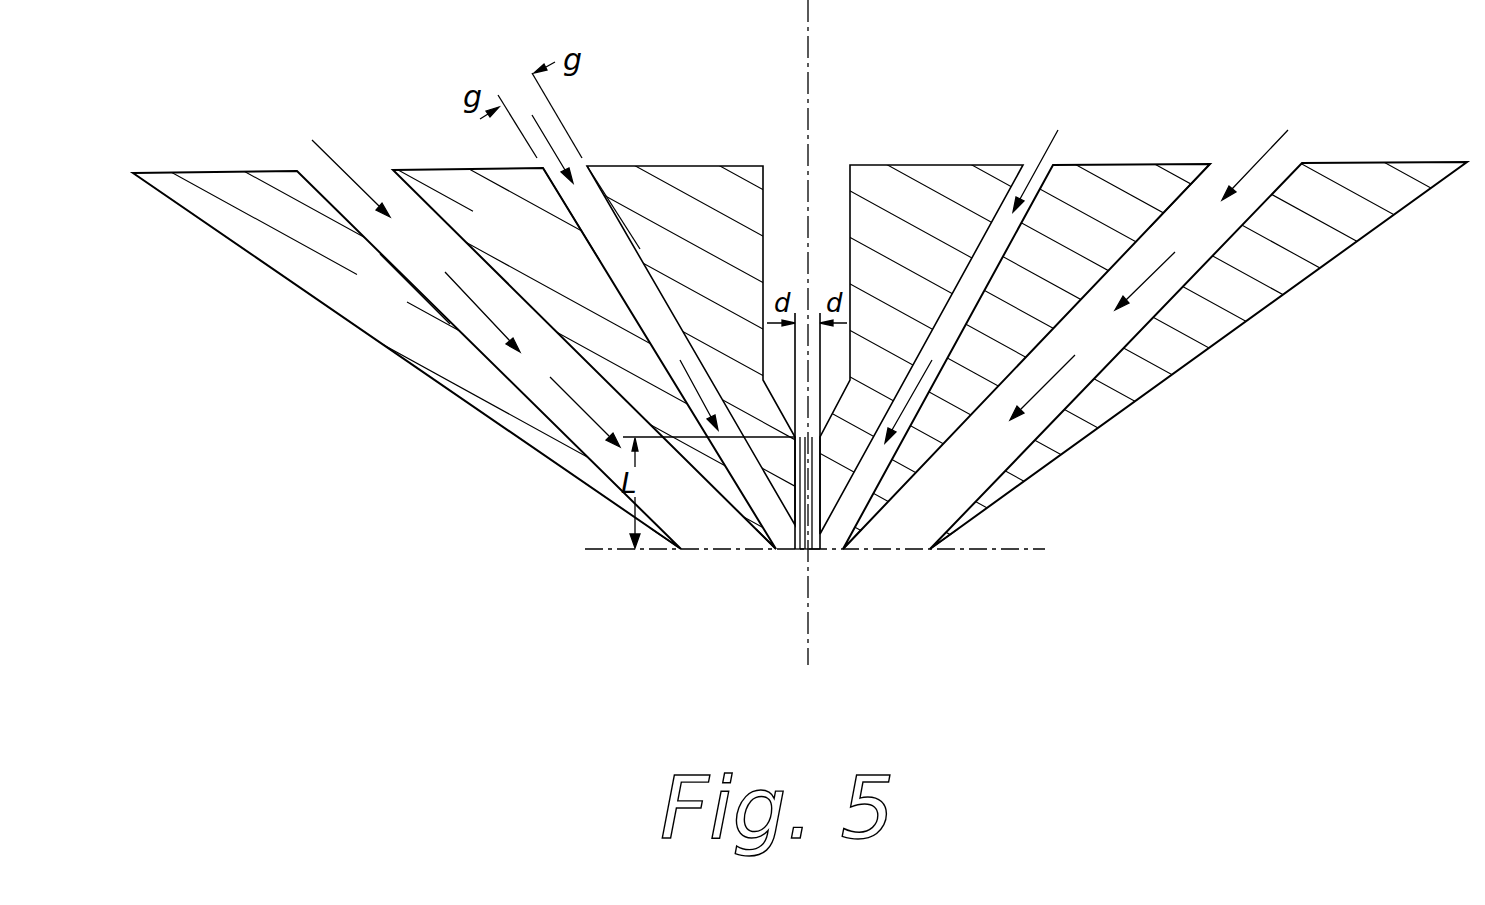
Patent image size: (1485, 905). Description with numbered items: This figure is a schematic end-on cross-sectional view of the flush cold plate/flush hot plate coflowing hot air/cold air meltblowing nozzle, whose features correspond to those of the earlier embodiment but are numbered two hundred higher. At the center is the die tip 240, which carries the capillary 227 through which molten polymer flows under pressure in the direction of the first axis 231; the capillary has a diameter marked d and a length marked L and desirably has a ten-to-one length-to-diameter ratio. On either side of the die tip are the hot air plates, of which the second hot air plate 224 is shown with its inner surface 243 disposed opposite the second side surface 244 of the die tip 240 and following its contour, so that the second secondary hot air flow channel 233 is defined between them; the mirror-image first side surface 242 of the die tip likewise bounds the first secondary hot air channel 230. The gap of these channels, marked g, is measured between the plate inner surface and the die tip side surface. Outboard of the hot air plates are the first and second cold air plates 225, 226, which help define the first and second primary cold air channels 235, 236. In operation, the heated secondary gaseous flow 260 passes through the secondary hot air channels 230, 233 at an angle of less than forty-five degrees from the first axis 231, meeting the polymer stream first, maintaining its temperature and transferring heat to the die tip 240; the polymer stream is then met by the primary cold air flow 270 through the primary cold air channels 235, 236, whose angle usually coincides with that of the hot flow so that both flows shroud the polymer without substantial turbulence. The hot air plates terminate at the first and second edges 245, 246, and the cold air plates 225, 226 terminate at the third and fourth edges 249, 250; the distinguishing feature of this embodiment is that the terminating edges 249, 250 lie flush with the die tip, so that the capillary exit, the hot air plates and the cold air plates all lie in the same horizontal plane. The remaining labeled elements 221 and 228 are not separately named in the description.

The extrusion orifice tip 221 is at (808, 553).
The second hot air plate 224 is at (458, 168).
The first cold air plate 225 is at (1383, 163).
The second cold air plate 226 is at (233, 170).
The capillary 227 is at (795, 458).
The capillary tube 228 is at (812, 512).
The first secondary hot air channel 230 is at (1060, 165).
The first axis 231 is at (820, 14).
The second secondary hot air flow channel 233 is at (612, 205).
The first primary cold air channel 235 is at (1277, 170).
The second primary cold air channel 236 is at (378, 182).
The die tip 240 is at (690, 166).
The first side surface of die tip 242 is at (1168, 208).
The inner surface of second hot air plate 243 is at (578, 203).
The second side surface of die tip 244 is at (455, 250).
The first edge 245 is at (852, 551).
The second edge 246 is at (775, 551).
The third edge 249 is at (934, 551).
The fourth edge 250 is at (678, 553).
The secondary hot gaseous flow 260 is at (560, 157).
The primary cold air flow 270 is at (585, 408).